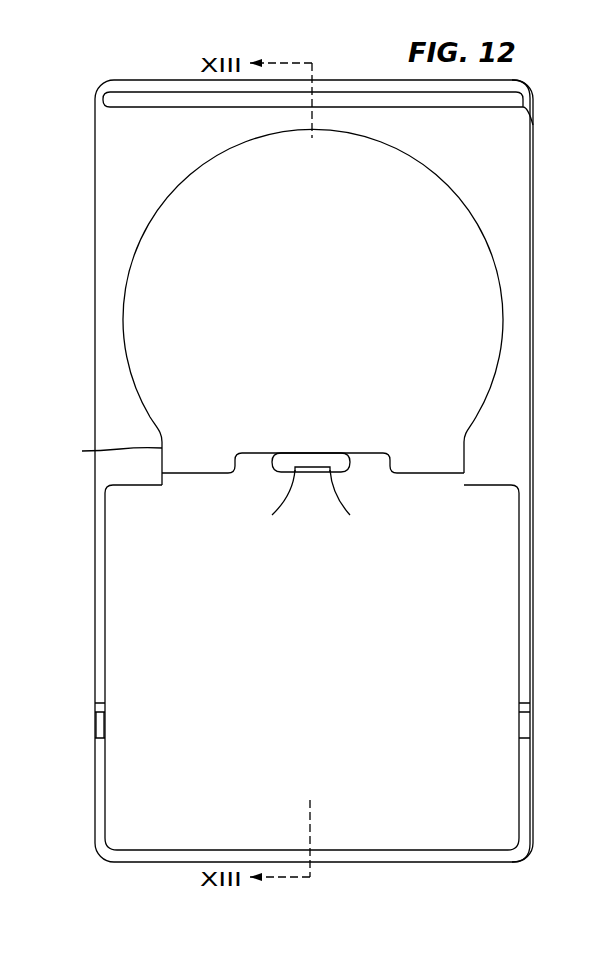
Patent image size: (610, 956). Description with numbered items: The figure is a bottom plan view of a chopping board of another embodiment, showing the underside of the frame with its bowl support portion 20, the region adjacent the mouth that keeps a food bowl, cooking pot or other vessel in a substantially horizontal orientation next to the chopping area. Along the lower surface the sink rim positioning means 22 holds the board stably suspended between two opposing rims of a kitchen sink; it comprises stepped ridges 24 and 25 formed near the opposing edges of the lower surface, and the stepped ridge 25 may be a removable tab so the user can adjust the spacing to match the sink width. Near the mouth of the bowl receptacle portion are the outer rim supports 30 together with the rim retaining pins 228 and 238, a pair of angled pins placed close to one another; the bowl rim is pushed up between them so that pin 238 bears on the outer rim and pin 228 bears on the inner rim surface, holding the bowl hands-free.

The bowl support portion 20 is at (470, 356).
The sink rim positioning means 22 is at (128, 99).
The stepped ridge 24 is at (172, 107).
The stepped ridge 25 is at (96, 718).
The outer rim supports 30 is at (109, 452).
The rim retaining pin 228 is at (338, 462).
The rim retaining pin 238 is at (300, 488).